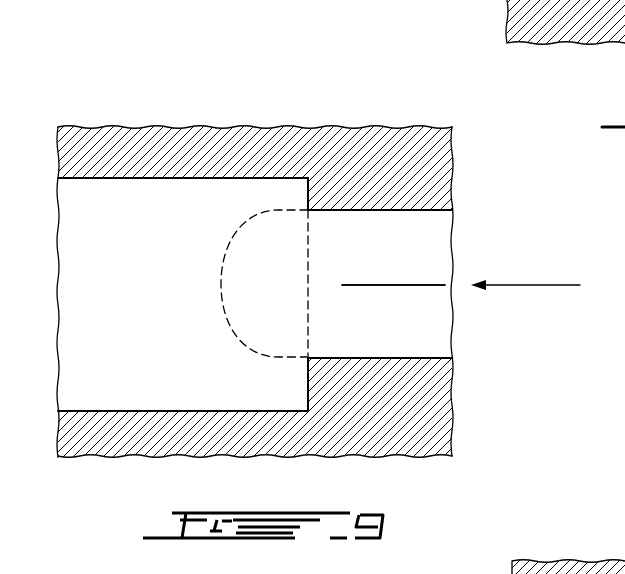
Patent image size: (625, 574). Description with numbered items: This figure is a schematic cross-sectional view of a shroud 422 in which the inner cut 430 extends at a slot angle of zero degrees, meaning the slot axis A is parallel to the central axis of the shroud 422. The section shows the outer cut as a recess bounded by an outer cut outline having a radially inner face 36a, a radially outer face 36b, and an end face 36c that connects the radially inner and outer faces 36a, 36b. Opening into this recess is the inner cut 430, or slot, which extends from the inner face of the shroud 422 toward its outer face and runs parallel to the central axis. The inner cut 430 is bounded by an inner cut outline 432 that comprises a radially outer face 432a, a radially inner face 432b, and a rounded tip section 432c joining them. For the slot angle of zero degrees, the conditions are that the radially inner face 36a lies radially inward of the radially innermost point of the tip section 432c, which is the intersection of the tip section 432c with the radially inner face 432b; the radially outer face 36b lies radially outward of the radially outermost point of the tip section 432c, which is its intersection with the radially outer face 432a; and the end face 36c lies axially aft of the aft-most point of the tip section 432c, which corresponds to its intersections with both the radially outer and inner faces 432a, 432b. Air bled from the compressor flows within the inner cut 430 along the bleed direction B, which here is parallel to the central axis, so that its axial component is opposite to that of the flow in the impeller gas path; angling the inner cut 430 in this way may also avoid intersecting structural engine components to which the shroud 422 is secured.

The shroud 422 is at (231, 99).
The radially inner face 36a is at (128, 411).
The radially outer face 36b is at (168, 178).
The end face 36c is at (308, 190).
The inner cut 430 is at (420, 251).
The inner cut outline 432 is at (350, 358).
The radially outer face 432a is at (405, 210).
The radially inner face 432b is at (408, 358).
The tip section 432c is at (221, 289).
The slot axis A is at (392, 285).
The bleed direction B is at (545, 287).